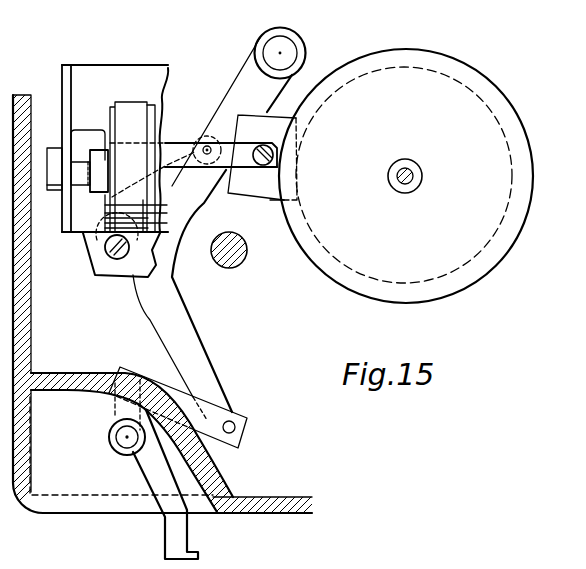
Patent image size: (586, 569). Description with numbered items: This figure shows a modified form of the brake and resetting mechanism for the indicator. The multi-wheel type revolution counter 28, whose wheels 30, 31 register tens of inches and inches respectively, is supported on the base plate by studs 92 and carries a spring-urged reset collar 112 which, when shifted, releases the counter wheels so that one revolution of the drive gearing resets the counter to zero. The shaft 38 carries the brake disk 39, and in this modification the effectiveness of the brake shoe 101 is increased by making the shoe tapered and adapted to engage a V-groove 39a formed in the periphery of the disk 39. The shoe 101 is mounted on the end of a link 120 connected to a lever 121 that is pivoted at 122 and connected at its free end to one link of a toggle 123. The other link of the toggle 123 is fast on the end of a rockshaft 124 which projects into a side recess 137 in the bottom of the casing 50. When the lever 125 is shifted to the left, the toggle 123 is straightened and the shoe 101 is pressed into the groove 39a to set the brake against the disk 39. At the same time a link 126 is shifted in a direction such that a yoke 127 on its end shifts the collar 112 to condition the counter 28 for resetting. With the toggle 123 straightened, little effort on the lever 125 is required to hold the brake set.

The multi-wheel type revolution counter 28 is at (148, 70).
The wheel 30 is at (128, 106).
The wheel 31 is at (161, 100).
The shaft 38 is at (412, 175).
The brake disk 39 is at (471, 273).
The V-groove 39a is at (487, 248).
The casing 50 is at (270, 514).
The studs 92 is at (257, 265).
The brake shoe 101 is at (277, 198).
The reset collar 112 is at (105, 157).
The link 120 is at (239, 116).
The lever 121 is at (243, 67).
The pivot 122 is at (290, 53).
The toggle 123 is at (112, 398).
The rockshaft 124 is at (127, 437).
The lever 125 is at (196, 558).
The link 126 is at (178, 141).
The yoke 127 is at (90, 188).
The side recess 137 is at (33, 452).